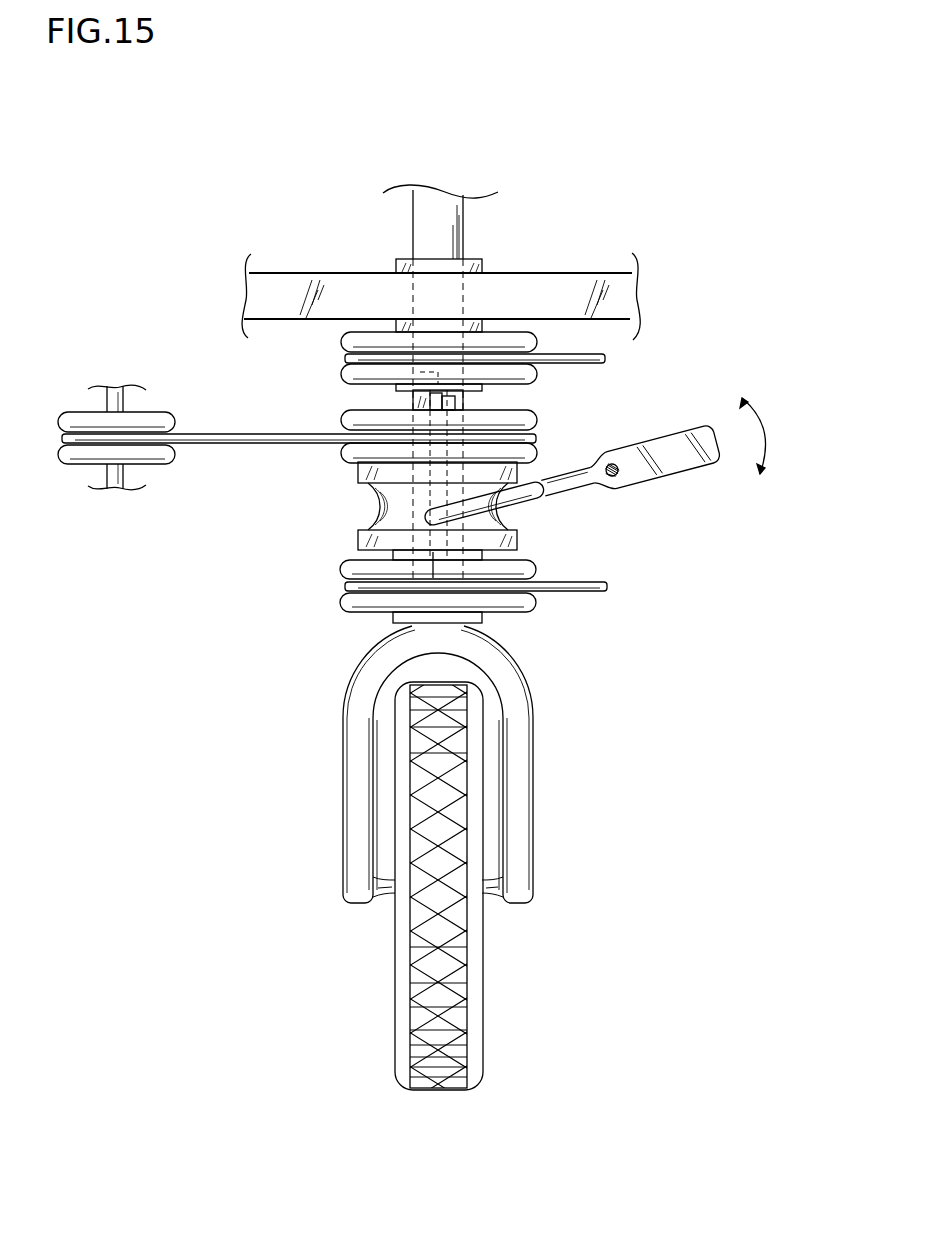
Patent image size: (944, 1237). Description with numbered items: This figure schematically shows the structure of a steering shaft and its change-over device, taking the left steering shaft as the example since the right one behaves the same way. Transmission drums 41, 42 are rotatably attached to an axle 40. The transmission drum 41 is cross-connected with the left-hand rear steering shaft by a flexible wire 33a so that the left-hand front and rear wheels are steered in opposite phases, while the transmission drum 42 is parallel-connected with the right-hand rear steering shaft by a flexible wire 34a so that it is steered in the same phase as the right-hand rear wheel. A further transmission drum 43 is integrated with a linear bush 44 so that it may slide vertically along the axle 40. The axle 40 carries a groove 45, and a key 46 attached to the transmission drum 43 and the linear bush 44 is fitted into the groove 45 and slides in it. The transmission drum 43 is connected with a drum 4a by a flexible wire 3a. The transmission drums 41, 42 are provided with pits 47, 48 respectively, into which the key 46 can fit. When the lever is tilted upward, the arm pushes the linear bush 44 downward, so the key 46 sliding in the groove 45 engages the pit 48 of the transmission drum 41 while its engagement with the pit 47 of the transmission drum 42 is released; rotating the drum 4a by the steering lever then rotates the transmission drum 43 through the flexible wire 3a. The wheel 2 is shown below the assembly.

The wheel 2 is at (473, 915).
The flexible wire 3a is at (223, 433).
The drum 4a is at (153, 418).
The flexible wire 33a is at (596, 596).
The flexible wire 34a is at (607, 360).
The axle 40 is at (452, 238).
The transmission drum 41 is at (343, 571).
The transmission drum 42 is at (342, 343).
The transmission drum 43 is at (345, 452).
The linear bush 44 is at (370, 508).
The groove 45 is at (450, 388).
The key 46 is at (465, 400).
The pit 47 is at (430, 372).
The pit 48 is at (448, 563).